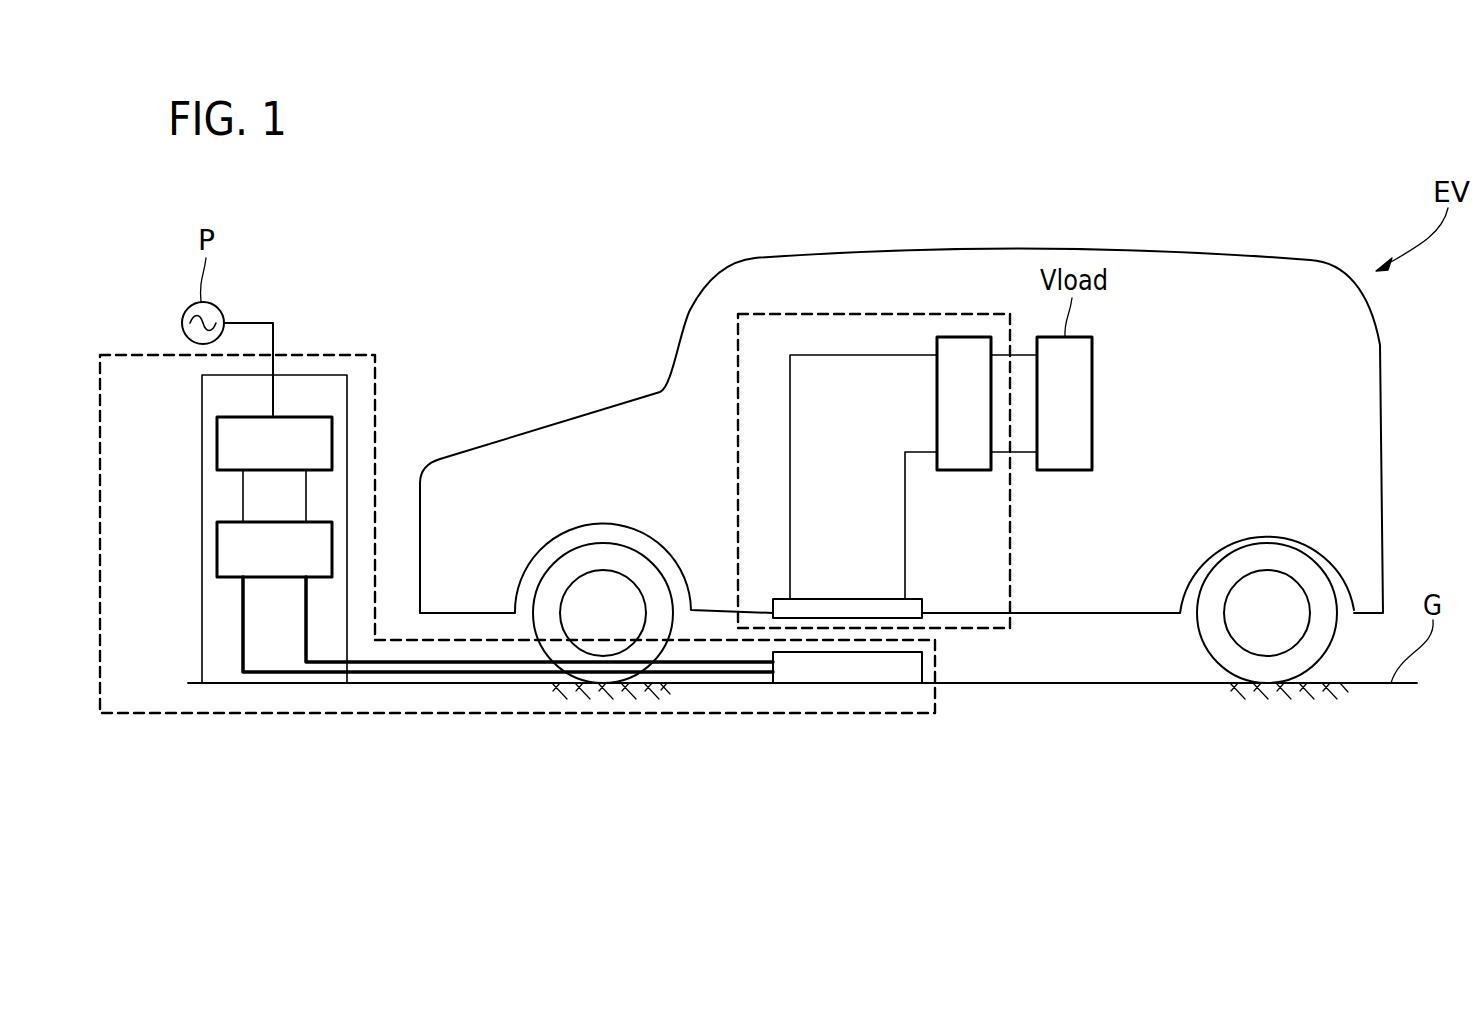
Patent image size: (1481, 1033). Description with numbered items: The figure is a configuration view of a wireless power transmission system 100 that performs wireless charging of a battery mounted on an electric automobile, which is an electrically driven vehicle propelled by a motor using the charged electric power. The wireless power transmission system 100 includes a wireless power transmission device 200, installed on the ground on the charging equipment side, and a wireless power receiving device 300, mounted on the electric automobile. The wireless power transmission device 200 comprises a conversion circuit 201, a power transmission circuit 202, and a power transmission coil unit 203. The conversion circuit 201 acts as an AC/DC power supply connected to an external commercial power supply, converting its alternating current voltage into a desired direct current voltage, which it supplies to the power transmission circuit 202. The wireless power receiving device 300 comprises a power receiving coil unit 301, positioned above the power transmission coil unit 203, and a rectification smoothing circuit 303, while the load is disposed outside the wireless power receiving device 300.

The wireless power transmission system 100 is at (538, 210).
The wireless power transmission device 200 is at (143, 352).
The conversion circuit 201 is at (217, 444).
The power transmission circuit 202 is at (217, 549).
The power transmission coil unit 203 is at (845, 672).
The wireless power receiving device 300 is at (776, 314).
The power receiving coil unit 301 is at (846, 608).
The rectification smoothing circuit 303 is at (960, 337).